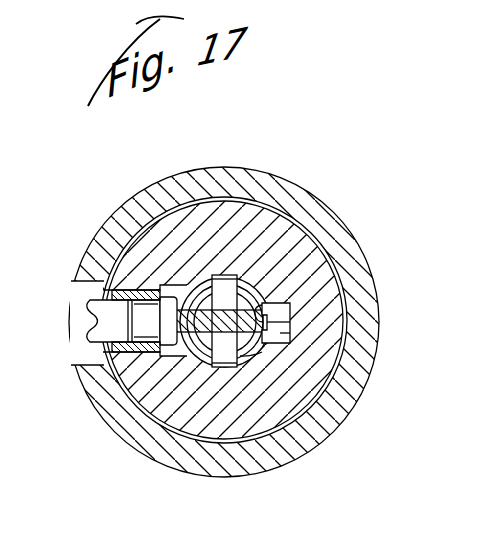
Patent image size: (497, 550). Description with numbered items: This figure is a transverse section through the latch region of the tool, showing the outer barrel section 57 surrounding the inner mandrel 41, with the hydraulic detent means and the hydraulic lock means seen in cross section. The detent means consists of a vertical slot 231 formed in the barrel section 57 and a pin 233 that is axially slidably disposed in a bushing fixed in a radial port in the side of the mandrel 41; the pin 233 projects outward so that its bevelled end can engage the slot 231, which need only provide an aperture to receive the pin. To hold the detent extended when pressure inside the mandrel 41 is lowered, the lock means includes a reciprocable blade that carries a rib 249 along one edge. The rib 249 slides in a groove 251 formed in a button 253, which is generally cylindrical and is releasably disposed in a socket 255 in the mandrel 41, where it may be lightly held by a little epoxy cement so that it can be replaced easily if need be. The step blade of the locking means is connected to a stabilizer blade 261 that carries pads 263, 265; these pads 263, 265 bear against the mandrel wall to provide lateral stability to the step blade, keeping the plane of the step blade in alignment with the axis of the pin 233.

The barrel section 57 is at (138, 203).
The mandrel 41 is at (140, 390).
The vertical slot 231 is at (73, 312).
The pin 233 is at (70, 331).
The pad 265 is at (224, 274).
The rib 249 is at (255, 291).
The groove 251 is at (268, 318).
The socket 255 is at (291, 323).
The button 253 is at (280, 333).
The stabilizer blade 261 is at (236, 353).
The pad 263 is at (224, 369).